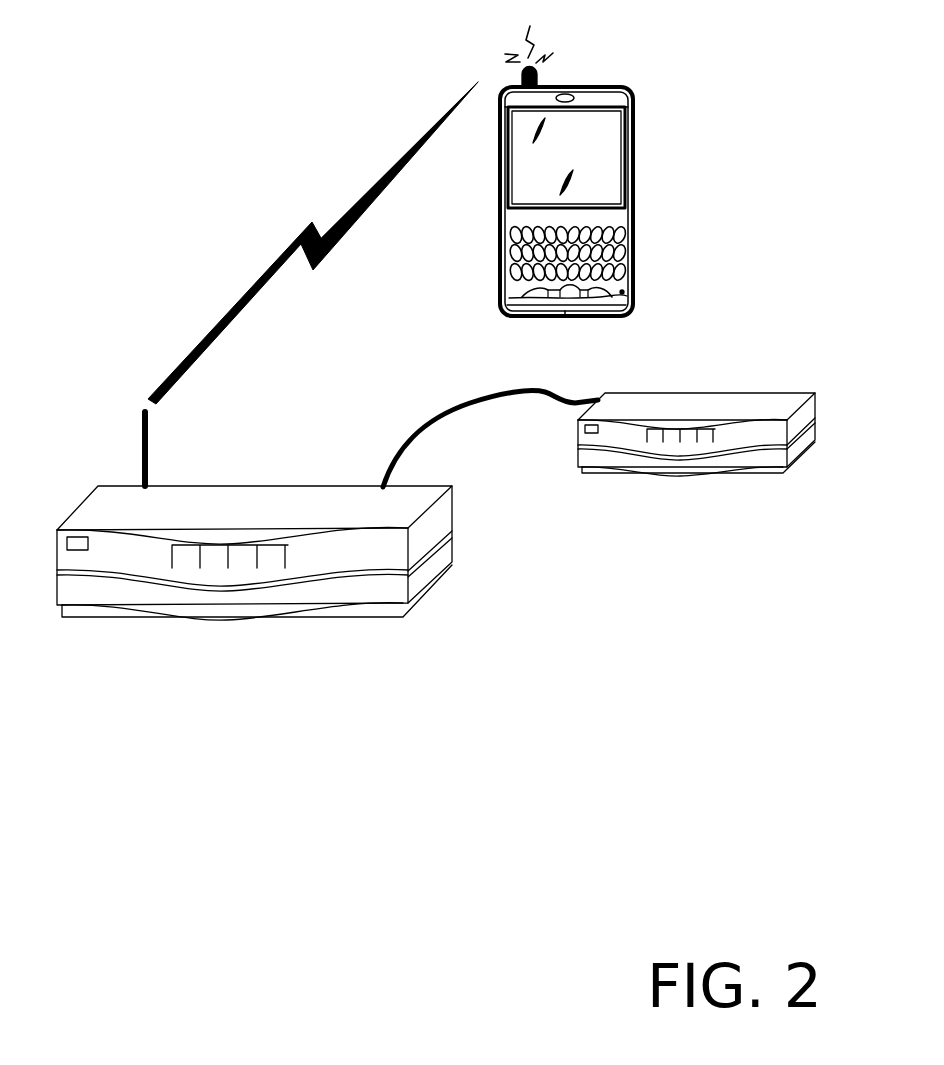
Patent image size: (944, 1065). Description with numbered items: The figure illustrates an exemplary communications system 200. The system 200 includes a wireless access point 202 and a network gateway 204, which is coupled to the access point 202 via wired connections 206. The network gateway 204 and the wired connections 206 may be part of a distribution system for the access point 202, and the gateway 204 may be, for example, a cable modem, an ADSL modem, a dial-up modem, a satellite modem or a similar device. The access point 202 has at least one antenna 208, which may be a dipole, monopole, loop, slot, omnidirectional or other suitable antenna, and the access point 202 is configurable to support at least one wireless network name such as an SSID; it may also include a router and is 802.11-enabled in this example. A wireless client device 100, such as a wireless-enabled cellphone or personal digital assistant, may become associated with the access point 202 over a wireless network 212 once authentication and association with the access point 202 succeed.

The communications system 200 is at (345, 92).
The wireless client device 100 is at (635, 237).
The wireless network 212 is at (220, 323).
The wireless access point 202 is at (285, 485).
The antenna 208 is at (148, 458).
The wired connections 206 is at (500, 397).
The network gateway 204 is at (604, 392).